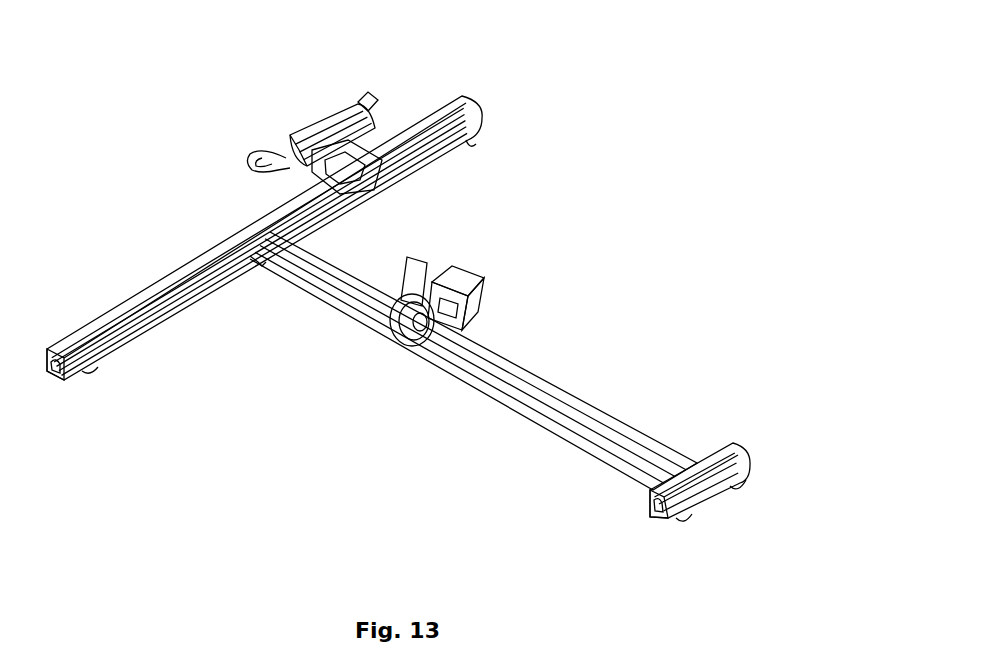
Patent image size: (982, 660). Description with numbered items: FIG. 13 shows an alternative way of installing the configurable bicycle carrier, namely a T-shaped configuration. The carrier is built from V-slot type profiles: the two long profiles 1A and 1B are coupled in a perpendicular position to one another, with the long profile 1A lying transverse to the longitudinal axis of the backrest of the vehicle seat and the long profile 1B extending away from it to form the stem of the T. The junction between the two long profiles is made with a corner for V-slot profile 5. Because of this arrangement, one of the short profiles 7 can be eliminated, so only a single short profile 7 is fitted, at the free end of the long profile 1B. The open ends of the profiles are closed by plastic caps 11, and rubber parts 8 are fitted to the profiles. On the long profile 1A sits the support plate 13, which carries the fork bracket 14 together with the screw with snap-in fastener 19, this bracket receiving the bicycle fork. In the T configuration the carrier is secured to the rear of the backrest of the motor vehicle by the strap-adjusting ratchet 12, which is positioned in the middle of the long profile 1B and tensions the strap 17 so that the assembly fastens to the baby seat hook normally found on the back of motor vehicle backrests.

The long profile 1A is at (445, 104).
The long profile 1B is at (507, 360).
The corner for V-slot profile 5 is at (260, 268).
The short profile 7 is at (728, 447).
The rubber part 8 is at (90, 373).
The plastic cap 11 is at (54, 377).
The strap-adjusting ratchet 12 is at (457, 274).
The support plate 13 is at (345, 160).
The fork bracket 14 is at (318, 122).
The strap 17 is at (400, 350).
The screw with snap-in fastener 19 is at (363, 93).